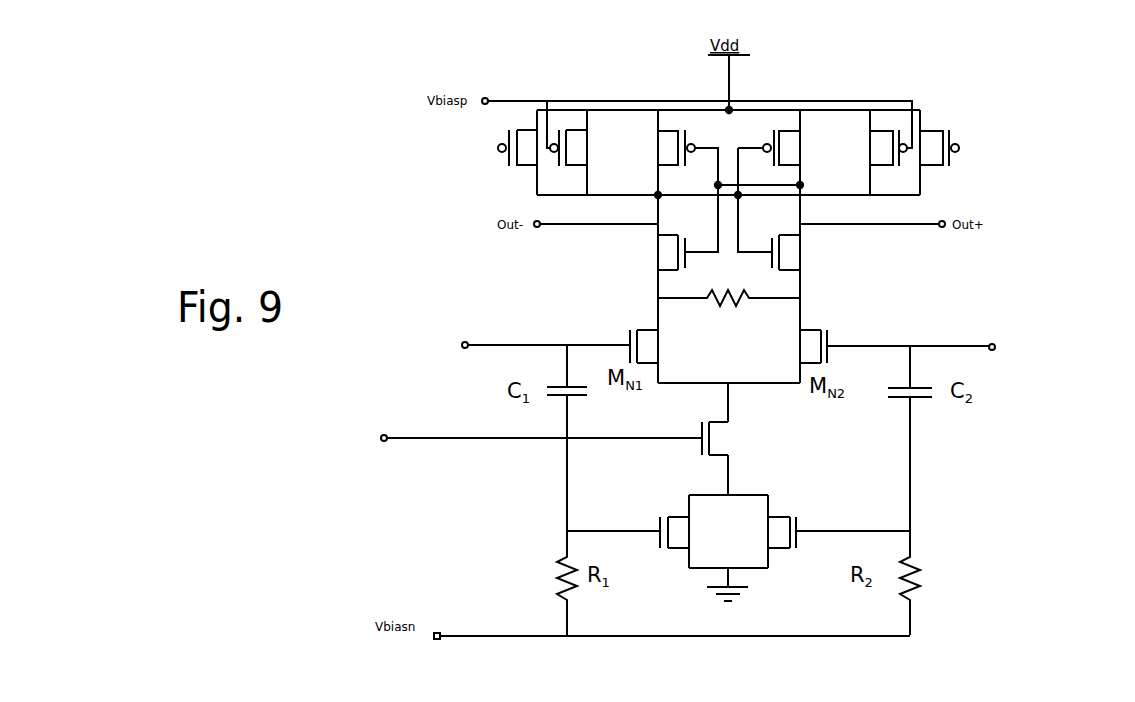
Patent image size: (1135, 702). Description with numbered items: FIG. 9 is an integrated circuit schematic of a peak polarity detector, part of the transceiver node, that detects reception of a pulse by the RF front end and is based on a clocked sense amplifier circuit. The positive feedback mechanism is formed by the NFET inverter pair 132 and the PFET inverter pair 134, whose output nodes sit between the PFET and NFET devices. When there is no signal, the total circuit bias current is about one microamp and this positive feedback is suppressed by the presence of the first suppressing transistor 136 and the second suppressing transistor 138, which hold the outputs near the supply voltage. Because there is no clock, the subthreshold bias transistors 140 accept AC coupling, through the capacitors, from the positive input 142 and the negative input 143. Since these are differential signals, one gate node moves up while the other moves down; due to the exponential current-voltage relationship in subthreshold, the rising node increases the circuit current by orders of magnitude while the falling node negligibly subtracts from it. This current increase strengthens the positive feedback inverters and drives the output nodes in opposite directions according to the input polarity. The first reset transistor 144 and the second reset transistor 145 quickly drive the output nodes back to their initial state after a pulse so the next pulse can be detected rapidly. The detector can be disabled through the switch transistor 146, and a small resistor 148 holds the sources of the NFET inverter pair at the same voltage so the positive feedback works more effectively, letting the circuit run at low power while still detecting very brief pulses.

The inverter pair MN3,4 132 is at (568, 261).
The inverter pair MP3,4 134 is at (683, 138).
The transistor MP2 136 is at (552, 144).
The transistor MP5 138 is at (900, 140).
The subthreshold bias transistors MN6,7 140 is at (541, 531).
The input Vin+ 142 is at (464, 342).
The negative input terminal Vin- 143 is at (995, 350).
The reset transistor MP1 144 is at (498, 146).
The reset transistor MP6 145 is at (960, 150).
The switch MN5 146 is at (697, 422).
The resistor R3 148 is at (742, 302).